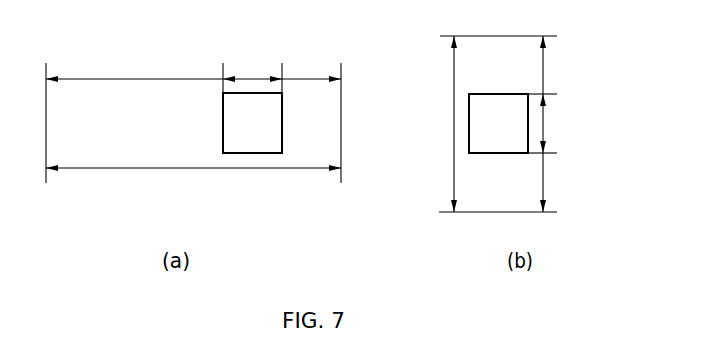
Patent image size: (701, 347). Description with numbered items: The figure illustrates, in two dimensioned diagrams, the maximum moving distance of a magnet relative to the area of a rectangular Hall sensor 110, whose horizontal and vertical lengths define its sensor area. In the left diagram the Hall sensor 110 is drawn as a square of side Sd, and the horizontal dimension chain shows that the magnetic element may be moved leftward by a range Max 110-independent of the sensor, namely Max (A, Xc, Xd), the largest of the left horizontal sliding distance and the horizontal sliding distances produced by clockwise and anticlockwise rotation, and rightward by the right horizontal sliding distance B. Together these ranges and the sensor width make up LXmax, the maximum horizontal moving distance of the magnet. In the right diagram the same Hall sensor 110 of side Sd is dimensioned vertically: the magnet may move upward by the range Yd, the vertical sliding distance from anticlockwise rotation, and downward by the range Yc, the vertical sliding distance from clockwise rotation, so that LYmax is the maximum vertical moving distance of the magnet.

The Hall sensor 110 is at (222, 125).
The Max (A, Xc, Xd) Max is at (134, 62).
The size of region 110 Sd is at (401, 98).
The right horizontal sliding distance B is at (311, 62).
The maximum horizontal moving distance of the magnet LXmax is at (193, 182).
The maximum vertical moving distance of the magnet LYmax is at (417, 124).
The vertical sliding distance by an anticlockwise rotation Yd is at (558, 65).
The vertical sliding distance by a clockwise rotation Yc is at (558, 182).